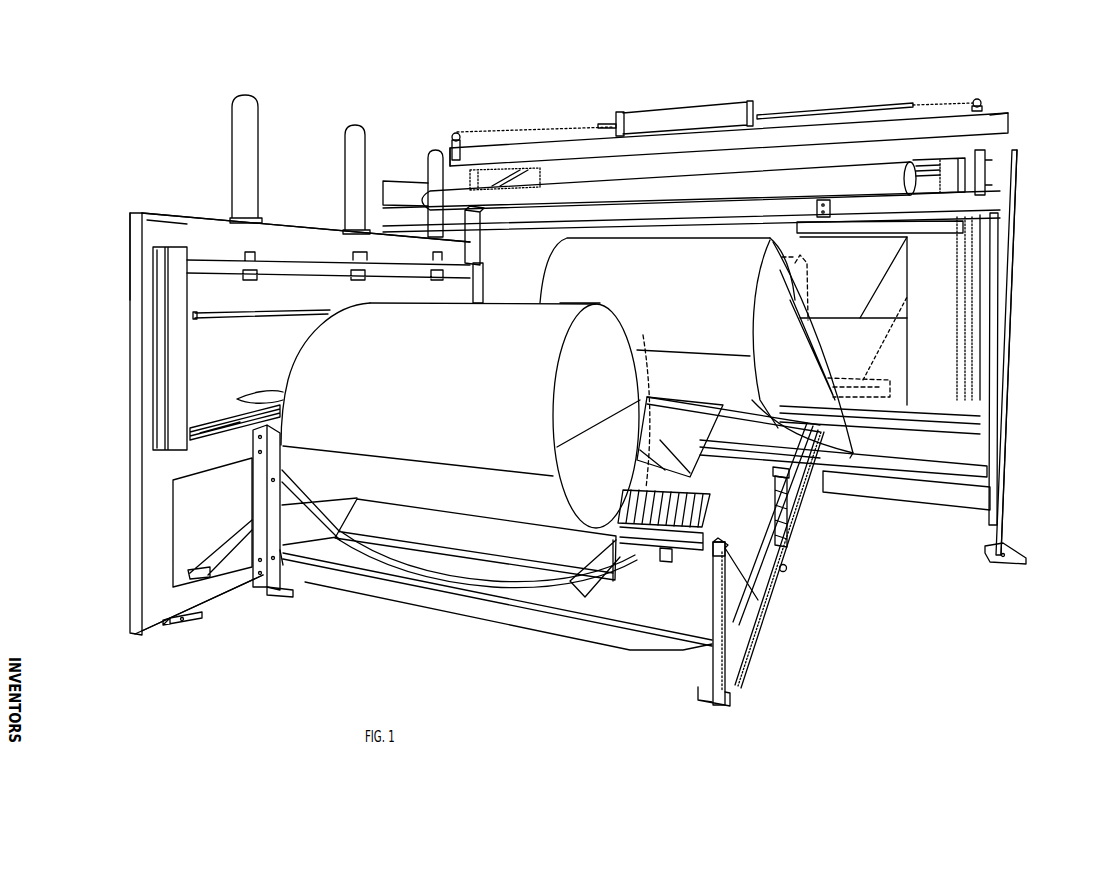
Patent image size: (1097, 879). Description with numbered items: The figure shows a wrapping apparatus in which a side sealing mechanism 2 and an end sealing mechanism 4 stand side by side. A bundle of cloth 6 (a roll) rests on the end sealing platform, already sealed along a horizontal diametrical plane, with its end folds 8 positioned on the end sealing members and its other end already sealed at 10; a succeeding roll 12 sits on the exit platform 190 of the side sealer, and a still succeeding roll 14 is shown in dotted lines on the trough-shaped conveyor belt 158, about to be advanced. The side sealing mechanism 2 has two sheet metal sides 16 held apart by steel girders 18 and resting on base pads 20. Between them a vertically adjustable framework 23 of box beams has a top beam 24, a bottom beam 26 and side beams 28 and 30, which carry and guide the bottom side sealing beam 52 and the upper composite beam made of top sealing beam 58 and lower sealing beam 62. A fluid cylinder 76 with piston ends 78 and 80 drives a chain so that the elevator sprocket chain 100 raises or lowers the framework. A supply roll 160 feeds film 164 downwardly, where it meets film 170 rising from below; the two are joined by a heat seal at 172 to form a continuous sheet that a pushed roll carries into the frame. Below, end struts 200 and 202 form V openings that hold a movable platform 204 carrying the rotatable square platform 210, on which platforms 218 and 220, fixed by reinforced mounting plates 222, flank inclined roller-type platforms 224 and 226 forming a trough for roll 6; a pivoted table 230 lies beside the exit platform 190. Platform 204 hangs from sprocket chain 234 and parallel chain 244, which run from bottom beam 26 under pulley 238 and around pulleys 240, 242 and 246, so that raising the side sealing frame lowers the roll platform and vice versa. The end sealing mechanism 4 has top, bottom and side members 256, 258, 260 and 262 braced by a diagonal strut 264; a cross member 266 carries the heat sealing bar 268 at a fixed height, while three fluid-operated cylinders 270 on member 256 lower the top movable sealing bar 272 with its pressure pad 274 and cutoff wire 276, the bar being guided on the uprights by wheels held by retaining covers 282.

The side sealing mechanism 2 is at (1031, 313).
The end sealing mechanism 4 is at (112, 246).
The bundle of cloth 6 is at (434, 390).
The end folds 8 is at (260, 395).
The sealed end 10 is at (620, 410).
The succeeding roll 12 is at (666, 281).
The still succeeding roll 14 is at (810, 280).
The sheet metal sides 16 is at (394, 183).
The steel girders 18 is at (1003, 202).
The base pads 20 is at (1016, 565).
The framework 23 is at (1024, 114).
The top beam 24 is at (988, 115).
The bottom beam 26 is at (930, 465).
The side beam 28 is at (1000, 270).
The side beam 30 is at (454, 135).
The bottom side sealing beam 52 is at (906, 437).
The top sealing beam 58 is at (980, 162).
The lower sealing beam 62 is at (863, 228).
The fluid cylinder 76 is at (680, 105).
The piston end 78 is at (605, 122).
The piston end 80 is at (875, 105).
The elevator sprocket chain 100 is at (965, 352).
The conveyor belt 158 is at (892, 380).
The supply roll 160 is at (752, 192).
The film 164 is at (893, 275).
The film 170 is at (908, 335).
The heat seal 172 is at (823, 313).
The exit platform 190 is at (704, 398).
The end strut 200 is at (282, 518).
The end strut 202 is at (720, 505).
The movable platform 204 is at (762, 596).
The square platform 210 is at (605, 594).
The platform 218 is at (492, 545).
The platform 220 is at (656, 458).
The reinforced mounting plates 222 is at (620, 576).
The inclined roller-type platform 224 is at (672, 565).
The inclined roller-type platform 226 is at (710, 520).
The table 230 is at (690, 428).
The sprocket chain 234 is at (822, 515).
The pulley 238 is at (788, 568).
The pulley 240 is at (296, 594).
The pulley 242 is at (727, 550).
The parallel chain 244 is at (822, 495).
The pulley 246 is at (775, 479).
The top member 256 is at (192, 218).
The bottom member 258 is at (218, 593).
The side member 260 is at (130, 522).
The side member 262 is at (481, 258).
The diagonal strut 264 is at (235, 533).
The cross member 266 is at (232, 460).
The heat sealing bar 268 is at (232, 414).
The fluid-operated cylinders 270 is at (232, 137).
The top movable sealing bar 272 is at (308, 299).
The pressure pad 274 is at (262, 314).
The cutoff wire 276 is at (210, 316).
The retaining covers 282 is at (172, 285).